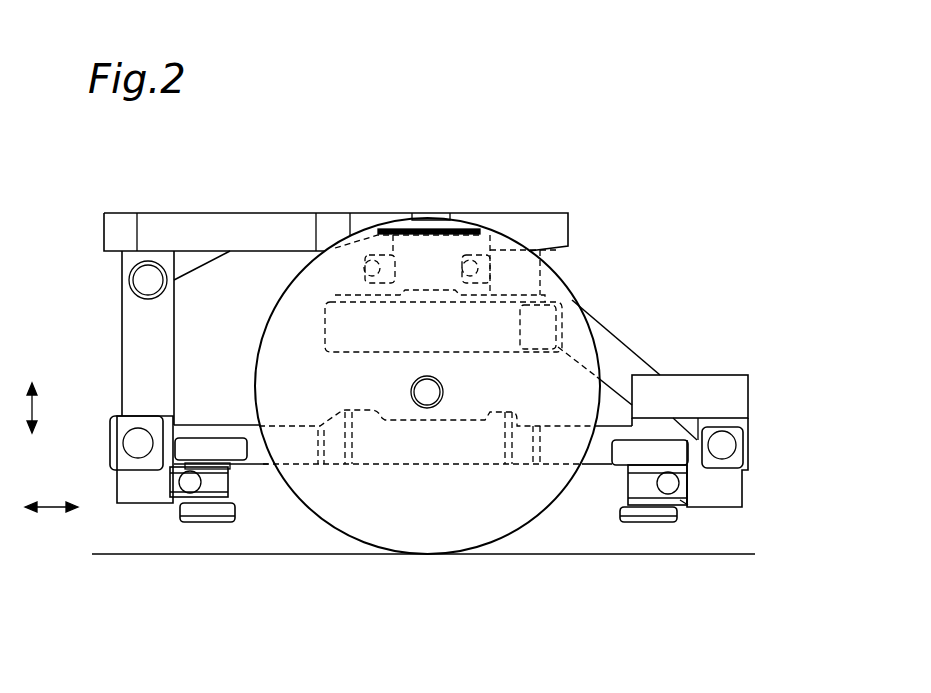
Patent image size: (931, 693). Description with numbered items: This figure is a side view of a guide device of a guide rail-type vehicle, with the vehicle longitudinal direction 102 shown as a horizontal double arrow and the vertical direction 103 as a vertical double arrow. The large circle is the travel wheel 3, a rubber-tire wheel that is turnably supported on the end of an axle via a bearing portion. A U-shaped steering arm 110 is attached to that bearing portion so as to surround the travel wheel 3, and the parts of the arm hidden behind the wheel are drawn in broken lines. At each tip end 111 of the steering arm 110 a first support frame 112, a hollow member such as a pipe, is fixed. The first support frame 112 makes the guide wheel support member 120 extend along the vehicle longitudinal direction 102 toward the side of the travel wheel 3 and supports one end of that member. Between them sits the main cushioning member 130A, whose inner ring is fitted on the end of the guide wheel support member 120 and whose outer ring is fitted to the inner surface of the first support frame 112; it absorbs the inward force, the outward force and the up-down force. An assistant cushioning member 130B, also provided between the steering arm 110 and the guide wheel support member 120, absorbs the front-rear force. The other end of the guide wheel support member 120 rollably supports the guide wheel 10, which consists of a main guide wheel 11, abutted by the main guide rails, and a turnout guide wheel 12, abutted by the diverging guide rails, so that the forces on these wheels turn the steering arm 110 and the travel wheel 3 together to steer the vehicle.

The travel wheel 3 is at (358, 528).
The guide wheel 10 is at (611, 562).
The main guide wheel 11 is at (613, 455).
The turnout guide wheel 12 is at (625, 518).
The vehicle longitudinal direction 102 is at (53, 511).
The vertical direction 103 is at (38, 405).
The steering arm 110 is at (547, 467).
The tip end 111 is at (750, 445).
The first support frame 112 is at (730, 491).
The guide wheel support member 120 is at (642, 482).
The main cushioning member 130A is at (693, 485).
The assistant cushioning member 130B is at (682, 505).